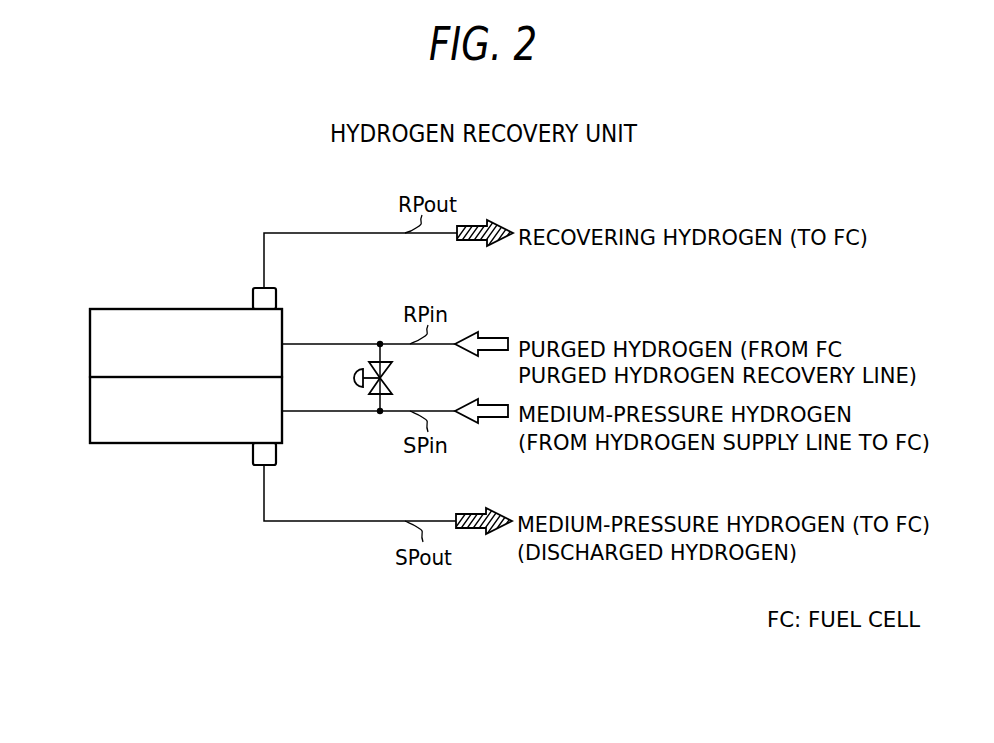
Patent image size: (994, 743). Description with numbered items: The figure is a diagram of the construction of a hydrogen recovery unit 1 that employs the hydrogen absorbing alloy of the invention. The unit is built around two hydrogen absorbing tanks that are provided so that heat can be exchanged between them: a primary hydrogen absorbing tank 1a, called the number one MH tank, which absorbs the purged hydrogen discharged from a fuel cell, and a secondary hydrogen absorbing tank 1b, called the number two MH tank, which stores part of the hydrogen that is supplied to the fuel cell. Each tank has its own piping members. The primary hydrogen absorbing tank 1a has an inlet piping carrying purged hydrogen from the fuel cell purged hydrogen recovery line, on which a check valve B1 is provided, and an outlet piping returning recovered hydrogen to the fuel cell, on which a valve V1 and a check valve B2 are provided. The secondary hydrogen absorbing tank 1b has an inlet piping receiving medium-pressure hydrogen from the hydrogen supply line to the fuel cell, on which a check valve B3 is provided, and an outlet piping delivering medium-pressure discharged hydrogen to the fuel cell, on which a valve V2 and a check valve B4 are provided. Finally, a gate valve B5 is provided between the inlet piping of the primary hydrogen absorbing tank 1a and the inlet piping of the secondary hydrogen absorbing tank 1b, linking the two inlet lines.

The hydrogen recovery unit 1 is at (140, 256).
The primary hydrogen absorbing tank 1a is at (90, 343).
The secondary hydrogen absorbing tank 1b is at (90, 409).
The valve V1 is at (253, 299).
The valve V2 is at (253, 455).
The check valve B1 is at (297, 343).
The check valve B2 is at (307, 233).
The check valve B3 is at (297, 413).
The check valve B4 is at (307, 523).
The gate valve B5 is at (356, 378).